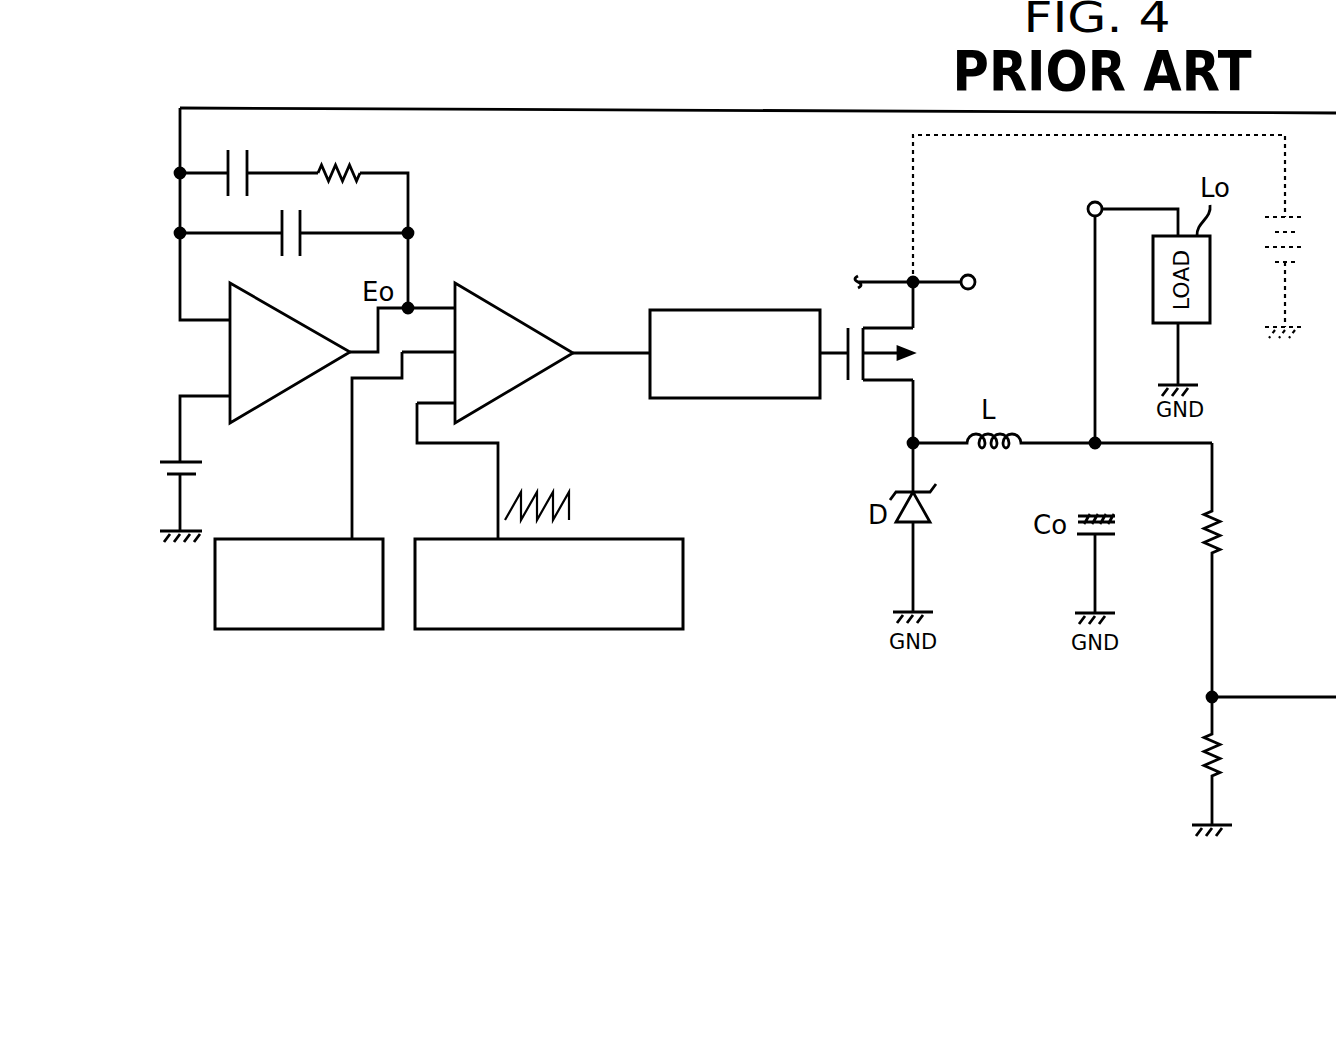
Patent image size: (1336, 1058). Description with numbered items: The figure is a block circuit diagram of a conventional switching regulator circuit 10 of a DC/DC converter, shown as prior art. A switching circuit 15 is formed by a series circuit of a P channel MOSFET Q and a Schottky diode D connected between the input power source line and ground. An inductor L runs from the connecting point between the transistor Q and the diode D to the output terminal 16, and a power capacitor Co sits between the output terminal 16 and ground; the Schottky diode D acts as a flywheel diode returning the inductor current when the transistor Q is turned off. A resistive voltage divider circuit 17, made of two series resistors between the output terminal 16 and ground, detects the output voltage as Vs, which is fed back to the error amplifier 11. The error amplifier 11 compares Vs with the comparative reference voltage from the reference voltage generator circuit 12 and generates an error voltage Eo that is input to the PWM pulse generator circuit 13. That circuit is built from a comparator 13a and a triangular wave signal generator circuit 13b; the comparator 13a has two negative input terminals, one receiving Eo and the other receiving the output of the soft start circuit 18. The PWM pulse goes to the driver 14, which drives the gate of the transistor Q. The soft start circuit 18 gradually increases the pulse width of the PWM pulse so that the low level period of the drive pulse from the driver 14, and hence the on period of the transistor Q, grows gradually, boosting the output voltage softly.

The switching regulator circuit 10 is at (779, 58).
The error amplifier 11 is at (313, 378).
The reference voltage generator circuit 12 is at (170, 460).
The PWM pulse generator circuit 13 is at (658, 425).
The comparator 13a is at (532, 379).
The triangular wave signal generator circuit 13b is at (503, 630).
The driver 14 is at (787, 310).
The switching circuit 15 is at (946, 230).
The output terminal 16 is at (1101, 202).
The resistive voltage divider circuit 17 is at (1245, 582).
The soft start circuit 18 is at (318, 630).